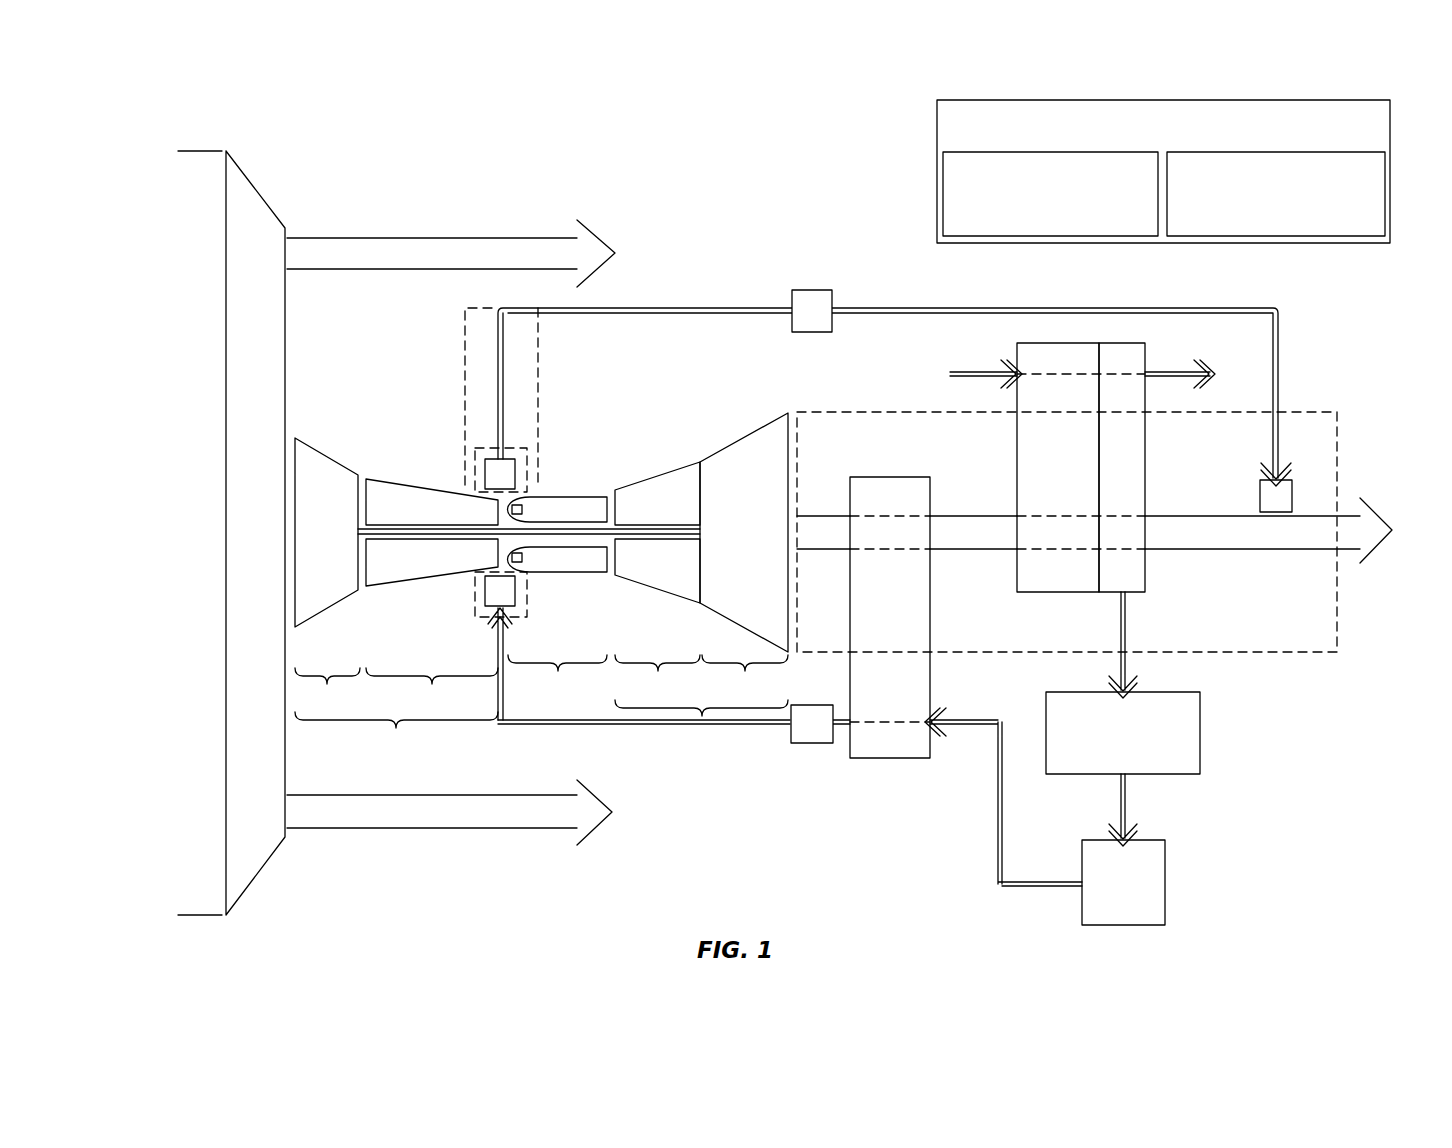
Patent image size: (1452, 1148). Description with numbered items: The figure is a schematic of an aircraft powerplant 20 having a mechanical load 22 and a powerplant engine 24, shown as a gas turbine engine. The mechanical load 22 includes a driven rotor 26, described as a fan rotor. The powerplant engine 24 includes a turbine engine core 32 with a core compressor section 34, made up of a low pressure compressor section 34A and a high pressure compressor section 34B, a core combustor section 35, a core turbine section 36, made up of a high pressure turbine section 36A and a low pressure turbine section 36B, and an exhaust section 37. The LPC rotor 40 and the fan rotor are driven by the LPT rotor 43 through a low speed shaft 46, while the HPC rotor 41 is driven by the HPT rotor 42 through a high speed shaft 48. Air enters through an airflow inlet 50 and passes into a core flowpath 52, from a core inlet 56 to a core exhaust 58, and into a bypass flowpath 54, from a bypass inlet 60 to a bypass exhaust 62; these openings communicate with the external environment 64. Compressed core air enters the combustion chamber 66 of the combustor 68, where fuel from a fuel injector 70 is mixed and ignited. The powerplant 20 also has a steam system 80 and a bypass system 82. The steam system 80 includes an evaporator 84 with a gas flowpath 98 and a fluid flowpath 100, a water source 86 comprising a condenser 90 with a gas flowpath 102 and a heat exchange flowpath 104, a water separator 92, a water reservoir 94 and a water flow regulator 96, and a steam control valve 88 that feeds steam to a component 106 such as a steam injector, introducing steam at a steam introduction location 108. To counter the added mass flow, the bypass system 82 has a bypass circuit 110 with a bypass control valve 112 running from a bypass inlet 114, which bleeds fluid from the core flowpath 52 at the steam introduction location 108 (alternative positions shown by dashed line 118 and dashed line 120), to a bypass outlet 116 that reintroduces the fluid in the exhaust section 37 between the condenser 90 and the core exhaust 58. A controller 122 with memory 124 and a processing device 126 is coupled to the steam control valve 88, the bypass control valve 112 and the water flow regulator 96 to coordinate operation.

The powerplant 20 is at (262, 96).
The mechanical load 22 is at (276, 158).
The powerplant engine 24 is at (672, 338).
The driven rotor 26 is at (226, 397).
The turbine engine core 32 is at (403, 378).
The core compressor section 34 is at (396, 736).
The low pressure compressor section 34A is at (327, 690).
The high pressure compressor section 34B is at (432, 690).
The core combustor section 35 is at (557, 678).
The core turbine section 36 is at (701, 716).
The high pressure turbine section 36A is at (657, 676).
The low pressure turbine section 36B is at (745, 676).
The exhaust section 37 is at (1283, 660).
The LPC rotor 40 is at (326, 532).
The HPC rotor 41 is at (432, 532).
The HPT rotor 42 is at (657, 532).
The LPT rotor 43 is at (744, 532).
The low speed shaft 46 is at (395, 528).
The high speed shaft 48 is at (592, 527).
The airflow inlet 50 is at (178, 175).
The core flowpath 52 is at (966, 515).
The bypass flowpath 54 is at (420, 237).
The core inlet 56 is at (295, 488).
The core exhaust 58 is at (1393, 535).
The bypass inlet 60 is at (285, 248).
The bypass exhaust 62 is at (615, 253).
The external environment 64 is at (1111, 522).
The combustion chamber 66 is at (570, 510).
The combustor 68 is at (597, 576).
The fuel injector 70 is at (524, 506).
The steam system 80 is at (1198, 896).
The bypass system 82 is at (840, 250).
The evaporator 84 is at (890, 617).
The water source 86 is at (1213, 794).
The steam control valve 88 is at (812, 744).
The condenser 90 is at (1082, 467).
The water separator 92 is at (1122, 467).
The water reservoir 94 is at (1123, 683).
The water flow regulator 96 is at (1123, 849).
The evaporator gas flowpath 98 is at (905, 550).
The evaporator fluid flowpath 100 is at (888, 724).
The condenser gas flowpath 102 is at (1057, 550).
The heat exchange flowpath 104 is at (1057, 372).
The component 106 is at (485, 588).
The steam introduction location 108 is at (480, 617).
The bypass circuit 110 is at (882, 300).
The bypass control valve 112 is at (812, 332).
The bypass inlet 114 is at (485, 470).
The bypass outlet 116 is at (1260, 495).
The dashed line 118 is at (460, 395).
The dashed line 120 is at (540, 352).
The controller 122 is at (1163, 171).
The memory 124 is at (1276, 194).
The processing device 126 is at (1050, 194).